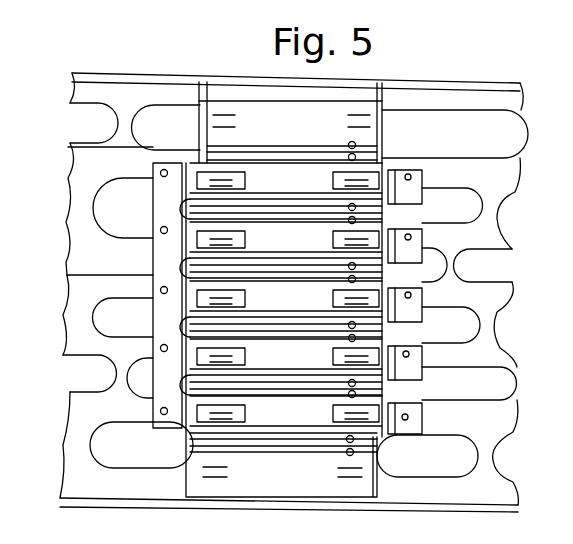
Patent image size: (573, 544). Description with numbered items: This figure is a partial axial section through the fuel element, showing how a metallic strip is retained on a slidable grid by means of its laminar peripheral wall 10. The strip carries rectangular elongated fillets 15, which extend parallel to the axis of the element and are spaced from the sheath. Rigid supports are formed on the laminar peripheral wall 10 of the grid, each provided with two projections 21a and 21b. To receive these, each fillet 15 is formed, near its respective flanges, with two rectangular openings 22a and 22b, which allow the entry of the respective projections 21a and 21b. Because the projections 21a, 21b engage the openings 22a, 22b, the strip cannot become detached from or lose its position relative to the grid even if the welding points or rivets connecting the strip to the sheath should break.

The laminar peripheral wall 10 is at (300, 487).
The fillets 15 is at (280, 420).
The projection 21a is at (215, 114).
The projection 21b is at (364, 118).
The rectangular opening 22a is at (213, 182).
The rectangular opening 22b is at (364, 179).